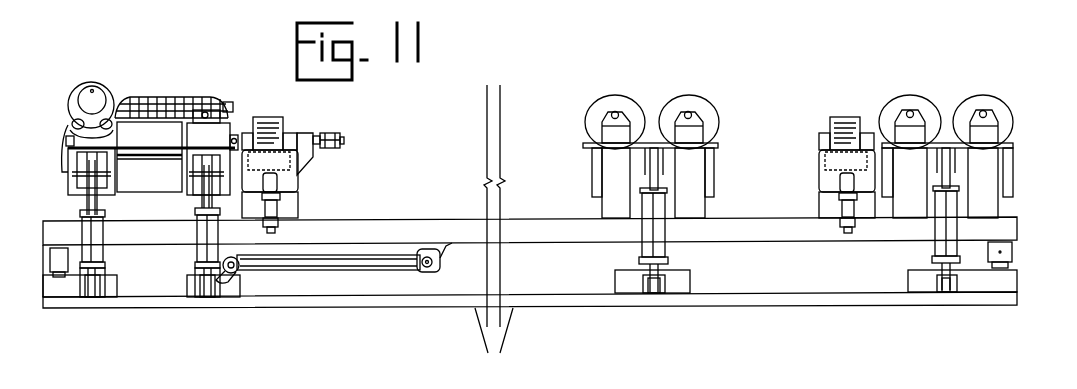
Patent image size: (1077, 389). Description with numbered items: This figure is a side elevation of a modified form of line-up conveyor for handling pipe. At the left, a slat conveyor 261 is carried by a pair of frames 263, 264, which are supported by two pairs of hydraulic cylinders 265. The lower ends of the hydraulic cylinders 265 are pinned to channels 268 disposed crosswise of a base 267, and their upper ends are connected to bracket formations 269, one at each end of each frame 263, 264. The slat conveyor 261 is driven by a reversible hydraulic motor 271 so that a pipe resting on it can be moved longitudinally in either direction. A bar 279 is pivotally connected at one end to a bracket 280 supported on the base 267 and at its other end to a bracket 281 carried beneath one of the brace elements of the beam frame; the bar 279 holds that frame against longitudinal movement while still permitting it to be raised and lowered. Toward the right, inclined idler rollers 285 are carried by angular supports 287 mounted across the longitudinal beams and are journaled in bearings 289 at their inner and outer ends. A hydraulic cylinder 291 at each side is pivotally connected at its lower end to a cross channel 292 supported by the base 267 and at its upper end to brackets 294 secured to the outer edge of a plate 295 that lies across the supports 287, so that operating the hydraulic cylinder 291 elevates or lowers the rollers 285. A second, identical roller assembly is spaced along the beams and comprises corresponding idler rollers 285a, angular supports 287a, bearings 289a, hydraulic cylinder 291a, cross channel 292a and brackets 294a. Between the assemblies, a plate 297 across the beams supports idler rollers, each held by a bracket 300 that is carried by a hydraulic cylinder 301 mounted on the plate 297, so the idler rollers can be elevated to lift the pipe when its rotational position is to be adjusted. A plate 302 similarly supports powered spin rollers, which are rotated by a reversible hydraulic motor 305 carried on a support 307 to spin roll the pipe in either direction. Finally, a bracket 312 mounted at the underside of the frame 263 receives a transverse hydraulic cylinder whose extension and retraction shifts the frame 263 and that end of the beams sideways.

The slat conveyor 261 is at (158, 95).
The frame 263 is at (76, 208).
The frame 264 is at (190, 204).
The hydraulic cylinders 265 is at (196, 250).
The base 267 is at (494, 231).
The channels 268 is at (106, 283).
The bracket formations 269 is at (7, 156).
The reversible hydraulic motor 271 is at (57, 123).
The bar 279 is at (300, 275).
The bracket 280 is at (240, 283).
The bracket 281 is at (442, 250).
The idler roller 285 is at (997, 96).
The idler roller 285a is at (703, 96).
The angular supports 287 is at (999, 207).
The angular supports 287a is at (600, 205).
The bearings 289 is at (977, 114).
The bearings 289a is at (687, 110).
The hydraulic cylinder 291 is at (933, 252).
The hydraulic cylinder 291a is at (642, 250).
The cross channel 292 is at (958, 278).
The cross channel 292a is at (660, 278).
The brackets 294 is at (950, 162).
The brackets 294a is at (658, 162).
The plate 295 is at (1005, 185).
The plate 297 is at (832, 204).
The bracket 300 is at (280, 206).
The hydraulic cylinder 301 is at (840, 216).
The plate 302 is at (306, 218).
The reversible hydraulic motor 305 is at (344, 141).
The support 307 is at (313, 157).
The bracket 312 is at (52, 258).